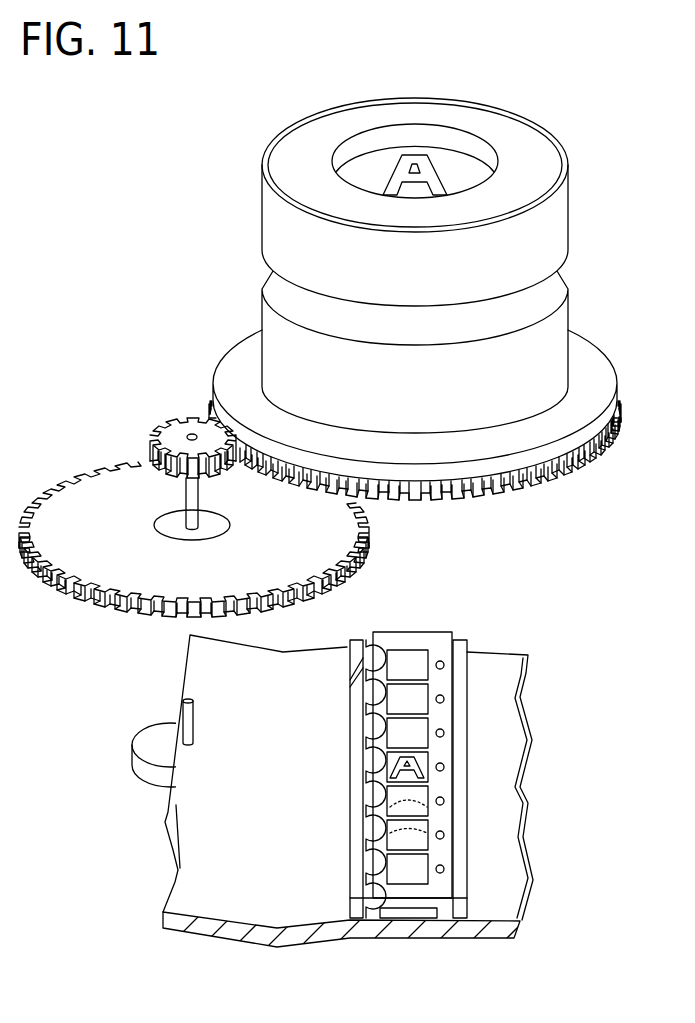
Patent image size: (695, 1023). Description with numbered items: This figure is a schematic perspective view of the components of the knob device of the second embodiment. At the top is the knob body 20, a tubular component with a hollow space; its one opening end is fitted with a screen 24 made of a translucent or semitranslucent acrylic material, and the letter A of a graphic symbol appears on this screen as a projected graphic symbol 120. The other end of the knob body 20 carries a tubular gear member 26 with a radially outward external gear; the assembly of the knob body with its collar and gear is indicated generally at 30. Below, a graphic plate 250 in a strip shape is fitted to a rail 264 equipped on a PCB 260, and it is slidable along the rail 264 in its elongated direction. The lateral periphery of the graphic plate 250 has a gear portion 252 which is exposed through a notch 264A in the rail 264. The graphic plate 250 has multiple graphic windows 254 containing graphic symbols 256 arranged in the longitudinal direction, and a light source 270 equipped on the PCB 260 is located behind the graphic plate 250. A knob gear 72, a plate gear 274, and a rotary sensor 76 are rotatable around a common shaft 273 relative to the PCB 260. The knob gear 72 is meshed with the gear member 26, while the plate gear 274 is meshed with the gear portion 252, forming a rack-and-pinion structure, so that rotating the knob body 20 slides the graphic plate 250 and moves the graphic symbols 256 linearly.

The knob body 20 is at (550, 217).
The screen 24 is at (470, 163).
The projected graphic symbol 120 is at (398, 179).
The gear assembly disc 30 is at (603, 481).
The gear member 26 is at (592, 455).
The knob gear 72 is at (150, 452).
The plate gear 274 is at (120, 600).
The PCB 260 is at (487, 825).
The graphic plate 250 is at (440, 888).
The rail 264 is at (462, 802).
The notch 264A is at (353, 710).
The gear portion 252 is at (363, 747).
The graphic windows 254 is at (420, 757).
The graphic symbols 256 is at (428, 768).
The light source 270 is at (417, 832).
The common shaft 273 is at (187, 728).
The rotary sensor 76 is at (153, 770).